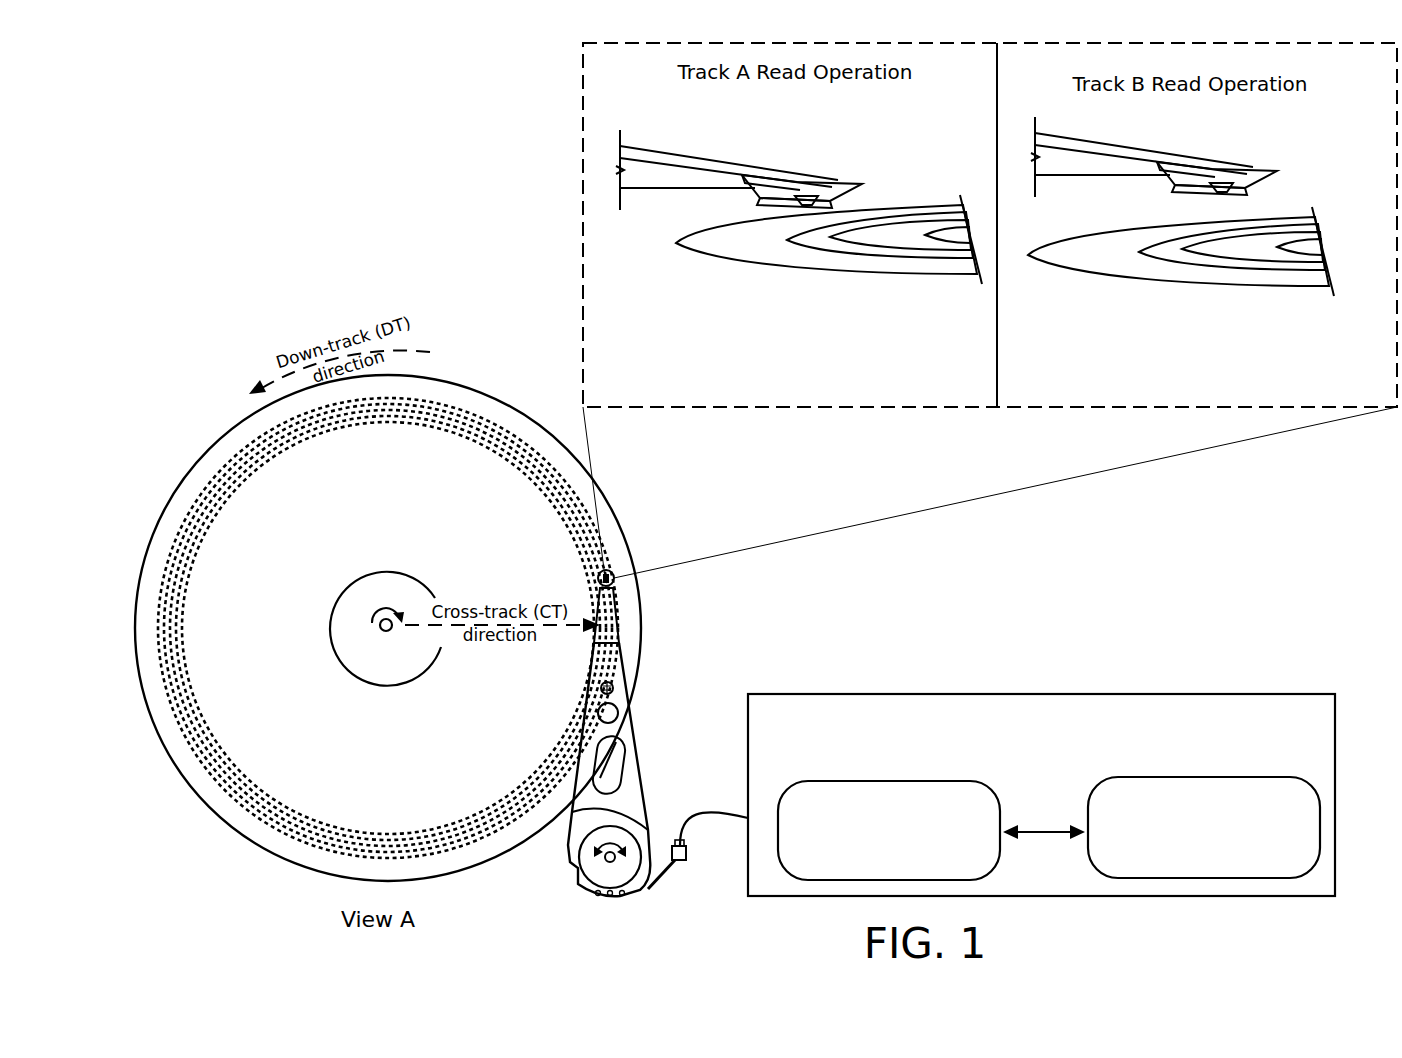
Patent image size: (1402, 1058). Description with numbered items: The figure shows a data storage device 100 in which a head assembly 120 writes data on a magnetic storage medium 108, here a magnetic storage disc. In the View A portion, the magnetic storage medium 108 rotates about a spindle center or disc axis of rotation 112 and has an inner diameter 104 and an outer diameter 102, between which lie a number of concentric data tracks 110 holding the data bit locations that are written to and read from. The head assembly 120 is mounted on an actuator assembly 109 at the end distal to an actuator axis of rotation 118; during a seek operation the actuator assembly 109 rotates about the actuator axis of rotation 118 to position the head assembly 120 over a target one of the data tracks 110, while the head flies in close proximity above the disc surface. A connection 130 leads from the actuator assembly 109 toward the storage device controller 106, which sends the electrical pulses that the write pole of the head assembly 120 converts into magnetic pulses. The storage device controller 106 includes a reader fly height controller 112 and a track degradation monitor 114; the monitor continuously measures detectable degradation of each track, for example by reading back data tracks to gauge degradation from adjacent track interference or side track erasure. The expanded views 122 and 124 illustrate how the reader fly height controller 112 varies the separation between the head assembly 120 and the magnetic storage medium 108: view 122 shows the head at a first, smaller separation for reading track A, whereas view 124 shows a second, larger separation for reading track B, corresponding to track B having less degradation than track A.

The data storage device 100 is at (283, 137).
The outer diameter 102 is at (213, 440).
The inner diameter 104 is at (332, 636).
The storage device controller 106 is at (1041, 795).
The magnetic storage medium 108 is at (233, 831).
The actuator assembly 109 is at (642, 746).
The data tracks 110 is at (192, 754).
The reader fly height controller 112 is at (320, 572).
The track degradation monitor 114 is at (1204, 827).
The actuator axis of rotation 118 is at (604, 857).
The head assembly 120 is at (620, 583).
The expanded view 122 is at (740, 348).
The expanded view 124 is at (1085, 350).
The flex circuit connector 130 is at (676, 892).